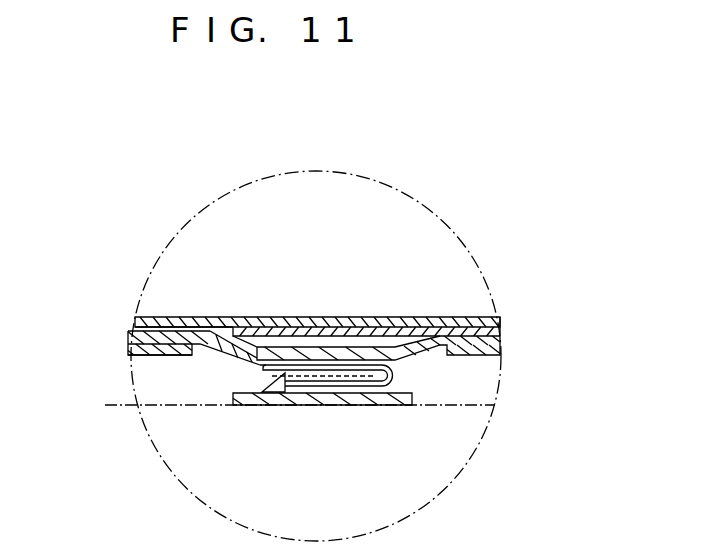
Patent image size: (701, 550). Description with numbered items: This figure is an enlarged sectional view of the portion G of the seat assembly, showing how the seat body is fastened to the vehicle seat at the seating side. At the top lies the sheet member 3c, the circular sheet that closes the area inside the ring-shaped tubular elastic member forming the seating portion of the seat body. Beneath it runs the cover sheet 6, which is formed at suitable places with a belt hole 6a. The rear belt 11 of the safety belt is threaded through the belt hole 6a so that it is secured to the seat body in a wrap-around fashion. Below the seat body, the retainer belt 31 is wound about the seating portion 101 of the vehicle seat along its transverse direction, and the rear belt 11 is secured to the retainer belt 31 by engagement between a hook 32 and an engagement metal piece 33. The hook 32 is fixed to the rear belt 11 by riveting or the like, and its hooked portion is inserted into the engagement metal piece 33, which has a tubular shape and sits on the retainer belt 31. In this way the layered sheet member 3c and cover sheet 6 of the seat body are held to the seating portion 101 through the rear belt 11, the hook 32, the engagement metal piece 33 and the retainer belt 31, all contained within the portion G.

The sheet member 3c is at (278, 317).
The cover sheet 6 is at (365, 326).
The belt hole 6a is at (162, 371).
The rear belt 11 is at (170, 318).
The retainer belt 31 is at (386, 398).
The hook 32 is at (281, 392).
The engagement metal piece 33 is at (331, 387).
The seating portion 101 is at (453, 398).
The portion G is at (168, 471).